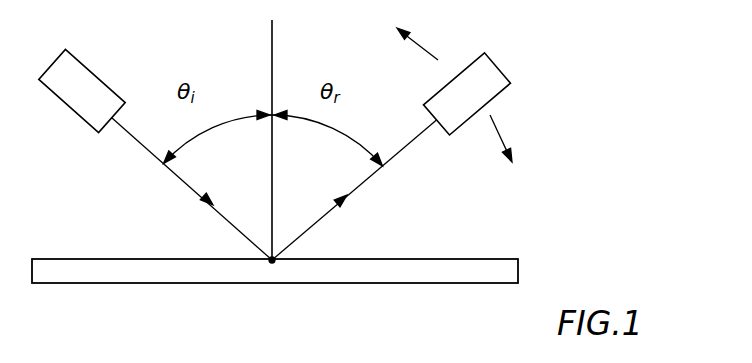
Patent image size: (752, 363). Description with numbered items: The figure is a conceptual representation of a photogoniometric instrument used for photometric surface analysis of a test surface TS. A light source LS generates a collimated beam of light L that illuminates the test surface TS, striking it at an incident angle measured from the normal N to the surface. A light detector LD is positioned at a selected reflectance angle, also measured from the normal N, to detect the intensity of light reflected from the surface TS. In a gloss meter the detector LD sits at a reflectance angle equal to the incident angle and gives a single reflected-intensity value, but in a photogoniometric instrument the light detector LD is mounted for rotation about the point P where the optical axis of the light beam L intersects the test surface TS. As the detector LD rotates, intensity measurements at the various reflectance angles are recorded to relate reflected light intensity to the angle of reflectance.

The normal N is at (277, 24).
The light source LS is at (73, 64).
The light beam L is at (128, 140).
The light detector LD is at (497, 85).
The test surface TS is at (480, 259).
The point P is at (272, 264).